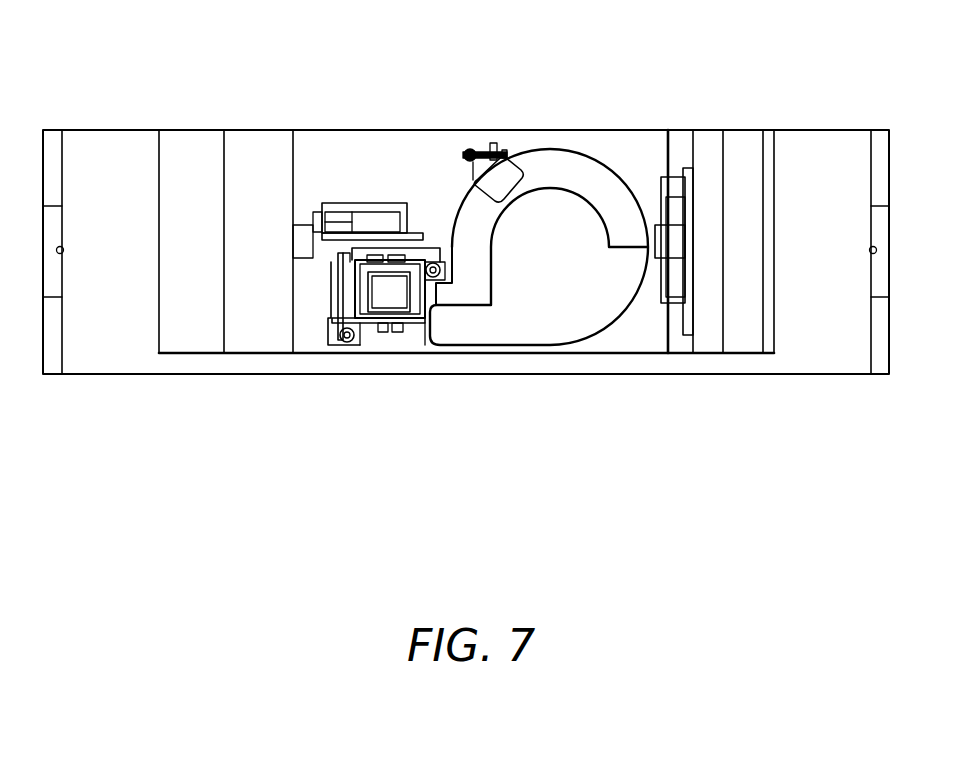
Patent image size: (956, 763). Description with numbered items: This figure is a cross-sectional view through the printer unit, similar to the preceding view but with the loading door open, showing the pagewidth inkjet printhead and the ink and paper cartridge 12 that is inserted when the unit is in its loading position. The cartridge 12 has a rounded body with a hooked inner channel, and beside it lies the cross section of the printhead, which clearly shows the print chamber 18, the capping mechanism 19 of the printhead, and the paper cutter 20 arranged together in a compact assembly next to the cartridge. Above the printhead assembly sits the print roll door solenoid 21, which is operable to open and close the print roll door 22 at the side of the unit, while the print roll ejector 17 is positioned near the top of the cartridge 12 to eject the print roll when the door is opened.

The ink and paper cartridge 12 is at (543, 297).
The print roll ejector 17 is at (482, 148).
The print chamber 18 is at (386, 297).
The capping mechanism 19 is at (395, 335).
The paper cutter 20 is at (340, 336).
The print roll door solenoid 21 is at (375, 208).
The print roll door 22 is at (743, 333).